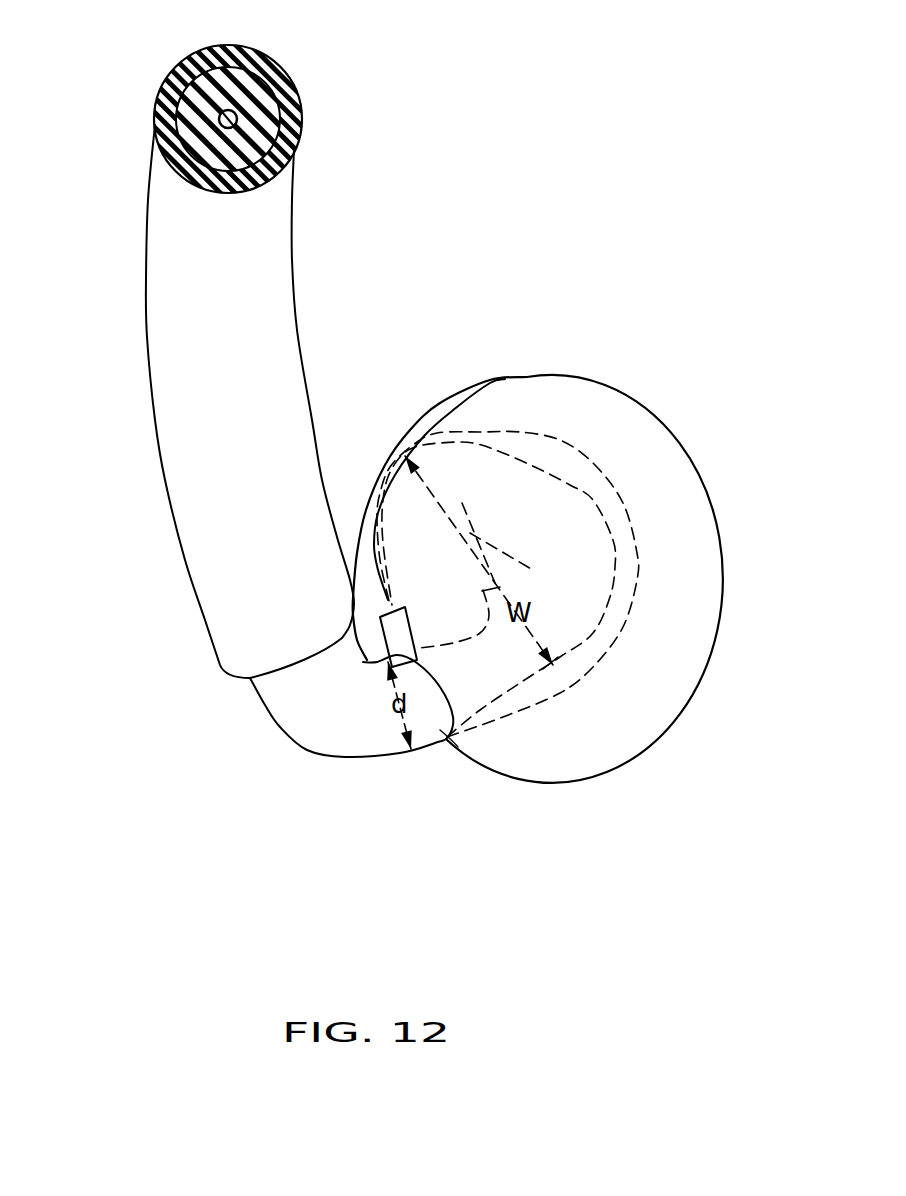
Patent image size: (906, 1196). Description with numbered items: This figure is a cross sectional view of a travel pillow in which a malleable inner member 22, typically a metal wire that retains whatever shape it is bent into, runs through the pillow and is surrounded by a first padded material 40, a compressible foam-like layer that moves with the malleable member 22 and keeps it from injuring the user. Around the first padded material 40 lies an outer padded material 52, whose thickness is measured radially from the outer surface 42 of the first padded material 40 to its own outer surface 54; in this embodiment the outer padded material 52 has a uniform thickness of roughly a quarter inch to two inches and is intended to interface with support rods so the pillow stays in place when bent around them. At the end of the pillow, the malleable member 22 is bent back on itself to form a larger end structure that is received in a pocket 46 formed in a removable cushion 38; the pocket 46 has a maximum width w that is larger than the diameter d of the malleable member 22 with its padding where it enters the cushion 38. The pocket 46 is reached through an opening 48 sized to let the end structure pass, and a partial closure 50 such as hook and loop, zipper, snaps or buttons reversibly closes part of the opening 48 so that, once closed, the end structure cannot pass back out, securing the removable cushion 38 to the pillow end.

The malleable inner member 22 is at (297, 140).
The removable cushion 38 is at (695, 467).
The first padded material 40 is at (252, 77).
The outer surface 42 is at (268, 82).
The pocket 46 is at (515, 440).
The opening 48 is at (443, 738).
The partial closure 50 is at (370, 657).
The outer padded material 52 is at (258, 240).
The outer surface 54 is at (147, 336).